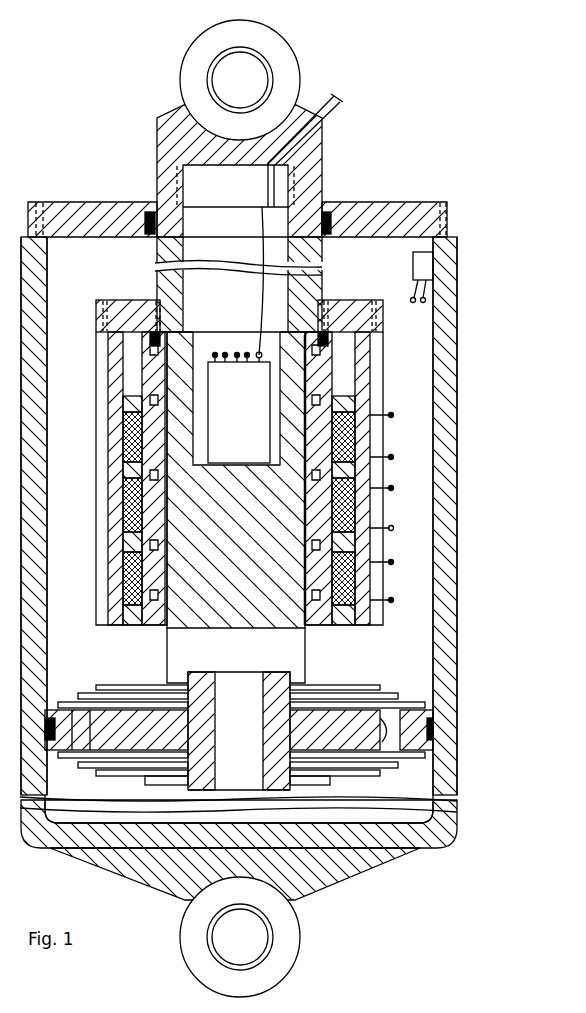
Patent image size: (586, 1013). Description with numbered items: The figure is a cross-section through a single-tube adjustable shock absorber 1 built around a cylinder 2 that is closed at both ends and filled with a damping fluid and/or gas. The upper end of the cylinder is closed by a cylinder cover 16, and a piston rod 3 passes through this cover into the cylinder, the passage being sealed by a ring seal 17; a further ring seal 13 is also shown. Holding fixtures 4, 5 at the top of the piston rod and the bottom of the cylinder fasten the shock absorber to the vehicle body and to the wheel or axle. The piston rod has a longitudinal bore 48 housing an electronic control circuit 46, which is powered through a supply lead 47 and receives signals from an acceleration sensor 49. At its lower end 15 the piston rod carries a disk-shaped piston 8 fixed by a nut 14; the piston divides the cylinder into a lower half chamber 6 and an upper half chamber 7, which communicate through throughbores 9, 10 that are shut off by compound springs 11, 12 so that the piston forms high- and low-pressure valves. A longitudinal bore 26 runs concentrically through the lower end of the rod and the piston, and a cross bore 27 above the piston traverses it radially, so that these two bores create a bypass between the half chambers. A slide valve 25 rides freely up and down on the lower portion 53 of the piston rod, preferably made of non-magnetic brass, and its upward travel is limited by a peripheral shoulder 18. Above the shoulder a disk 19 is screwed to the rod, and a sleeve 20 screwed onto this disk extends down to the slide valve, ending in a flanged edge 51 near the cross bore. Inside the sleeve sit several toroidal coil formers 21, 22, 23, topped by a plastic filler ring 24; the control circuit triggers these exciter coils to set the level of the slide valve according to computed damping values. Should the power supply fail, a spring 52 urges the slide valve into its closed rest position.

The shock absorber 1 is at (468, 232).
The cylinder 2 is at (445, 528).
The piston rod 3 is at (312, 182).
The holding fixture 4 is at (286, 68).
The holding fixture 5 is at (290, 940).
The lower half chamber 6 is at (239, 796).
The upper half chamber 7 is at (240, 516).
The piston 8 is at (212, 730).
The throughbore 9 is at (392, 712).
The throughbore 10 is at (80, 720).
The compound spring 11 is at (364, 690).
The compound spring 12 is at (378, 774).
The ring seal 13 is at (434, 722).
The nut 14 is at (146, 779).
The lower end of piston rod 15 is at (202, 790).
The cylinder cover 16 is at (237, 219).
The ring seal 17 is at (330, 236).
The peripheral shoulder 18 is at (165, 336).
The disk 19 is at (130, 305).
The sleeve 20 is at (101, 358).
The toroidal coil former 21 is at (118, 585).
The toroidal coil former 22 is at (118, 512).
The toroidal coil former 23 is at (118, 440).
The filler ring 24 is at (360, 388).
The slide valve 25 is at (318, 520).
The longitudinal bore 26 is at (215, 722).
The cross bore 27 is at (236, 655).
The control circuit 46 is at (239, 407).
The supply lead 47 is at (336, 104).
The longitudinal bore 48 is at (190, 234).
The acceleration sensor 49 is at (413, 264).
The flanged edge 51 is at (362, 626).
The spring 52 is at (340, 346).
The lower portion of piston rod 53 is at (239, 480).